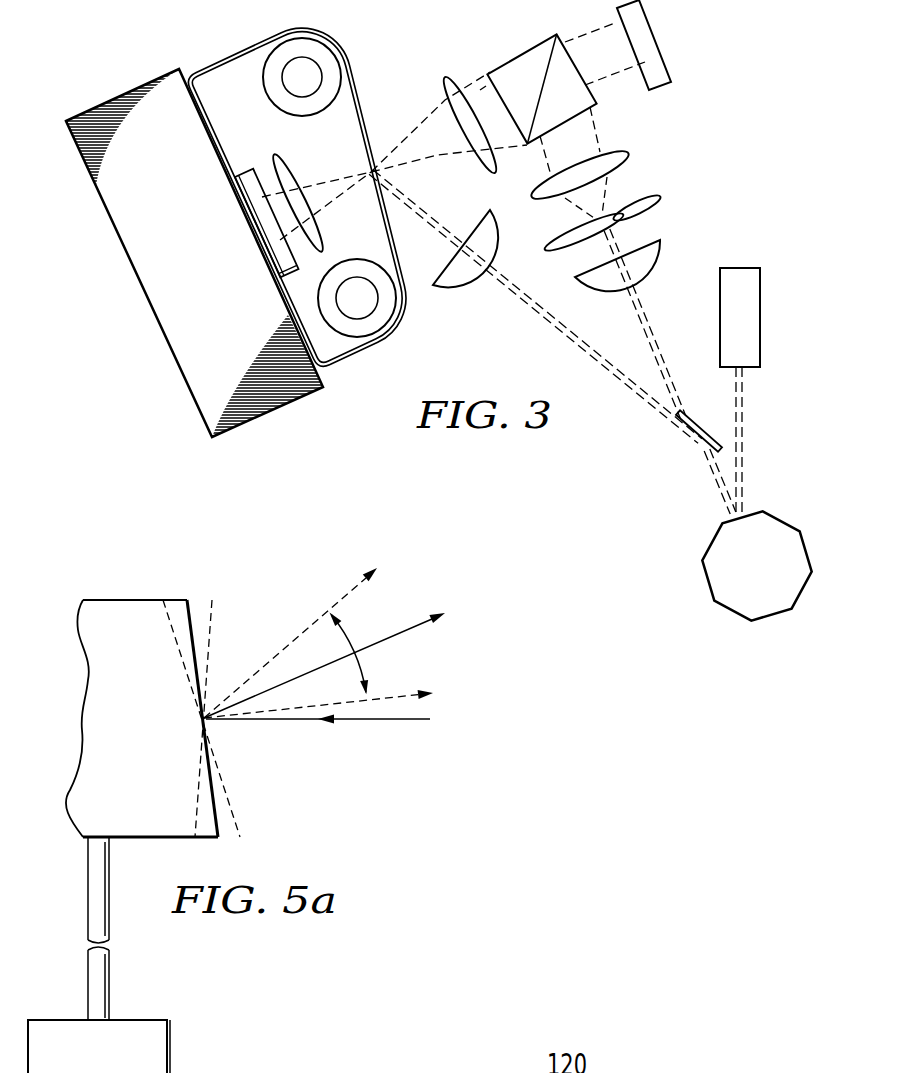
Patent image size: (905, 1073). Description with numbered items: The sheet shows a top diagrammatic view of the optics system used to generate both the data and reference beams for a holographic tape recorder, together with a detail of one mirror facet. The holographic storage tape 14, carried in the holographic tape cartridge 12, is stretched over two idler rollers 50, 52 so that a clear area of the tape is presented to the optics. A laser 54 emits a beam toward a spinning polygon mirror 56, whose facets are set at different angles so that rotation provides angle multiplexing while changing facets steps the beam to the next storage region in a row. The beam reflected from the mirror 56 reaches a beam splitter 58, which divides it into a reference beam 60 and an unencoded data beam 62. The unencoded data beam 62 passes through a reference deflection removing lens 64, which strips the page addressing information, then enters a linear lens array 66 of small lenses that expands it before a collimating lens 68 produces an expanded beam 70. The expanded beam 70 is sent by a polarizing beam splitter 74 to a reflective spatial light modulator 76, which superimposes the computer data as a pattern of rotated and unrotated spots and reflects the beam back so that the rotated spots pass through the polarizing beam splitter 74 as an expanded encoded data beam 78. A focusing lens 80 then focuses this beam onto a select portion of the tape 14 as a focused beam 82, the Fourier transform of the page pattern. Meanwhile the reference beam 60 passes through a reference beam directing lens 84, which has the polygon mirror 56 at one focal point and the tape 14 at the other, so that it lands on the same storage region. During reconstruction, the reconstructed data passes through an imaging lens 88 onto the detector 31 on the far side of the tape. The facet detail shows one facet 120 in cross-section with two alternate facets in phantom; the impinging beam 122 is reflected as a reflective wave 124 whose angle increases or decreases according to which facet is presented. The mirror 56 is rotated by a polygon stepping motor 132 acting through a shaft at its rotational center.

In FIG. 3, the holographic tape cartridge 12 is at (98, 104).
In FIG. 3, the holographic storage tape 14 is at (362, 130).
In FIG. 3, the detector 31 is at (262, 219).
In FIG. 3, the idler roller 50 is at (305, 64).
In FIG. 3, the idler roller 52 is at (357, 290).
In FIG. 3, the laser 54 is at (762, 292).
In FIG. 3, the spinning polygon mirror 56 is at (777, 523).
In FIG. 5a, the spinning polygon mirror 56 is at (107, 607).
In FIG. 3, the beam splitter 58 is at (703, 423).
In FIG. 3, the reference beam 60 is at (533, 308).
In FIG. 3, the unencoded data beam 62 is at (653, 322).
In FIG. 3, the reference deflection removing lens 64 is at (608, 290).
In FIG. 3, the lens array 66 is at (658, 196).
In FIG. 3, the collimating lens 68 is at (535, 190).
In FIG. 3, the expanded beam 70 is at (582, 143).
In FIG. 3, the polarizing beam splitter 74 is at (523, 50).
In FIG. 3, the spatial light modulator 76 is at (667, 62).
In FIG. 3, the expanded encoded data beam 78 is at (483, 87).
In FIG. 3, the focusing lens 80 is at (445, 90).
In FIG. 3, the focused beam 82 is at (435, 152).
In FIG. 3, the reference beam directing lens 84 is at (455, 285).
In FIG. 3, the imaging lens 88 is at (292, 180).
In FIG. 5a, the facet 120 is at (192, 605).
In FIG. 5a, the impinging beam 122 is at (397, 725).
In FIG. 5a, the reflective wave 124 is at (427, 617).
In FIG. 5a, the polygon stepping motor 132 is at (170, 1060).